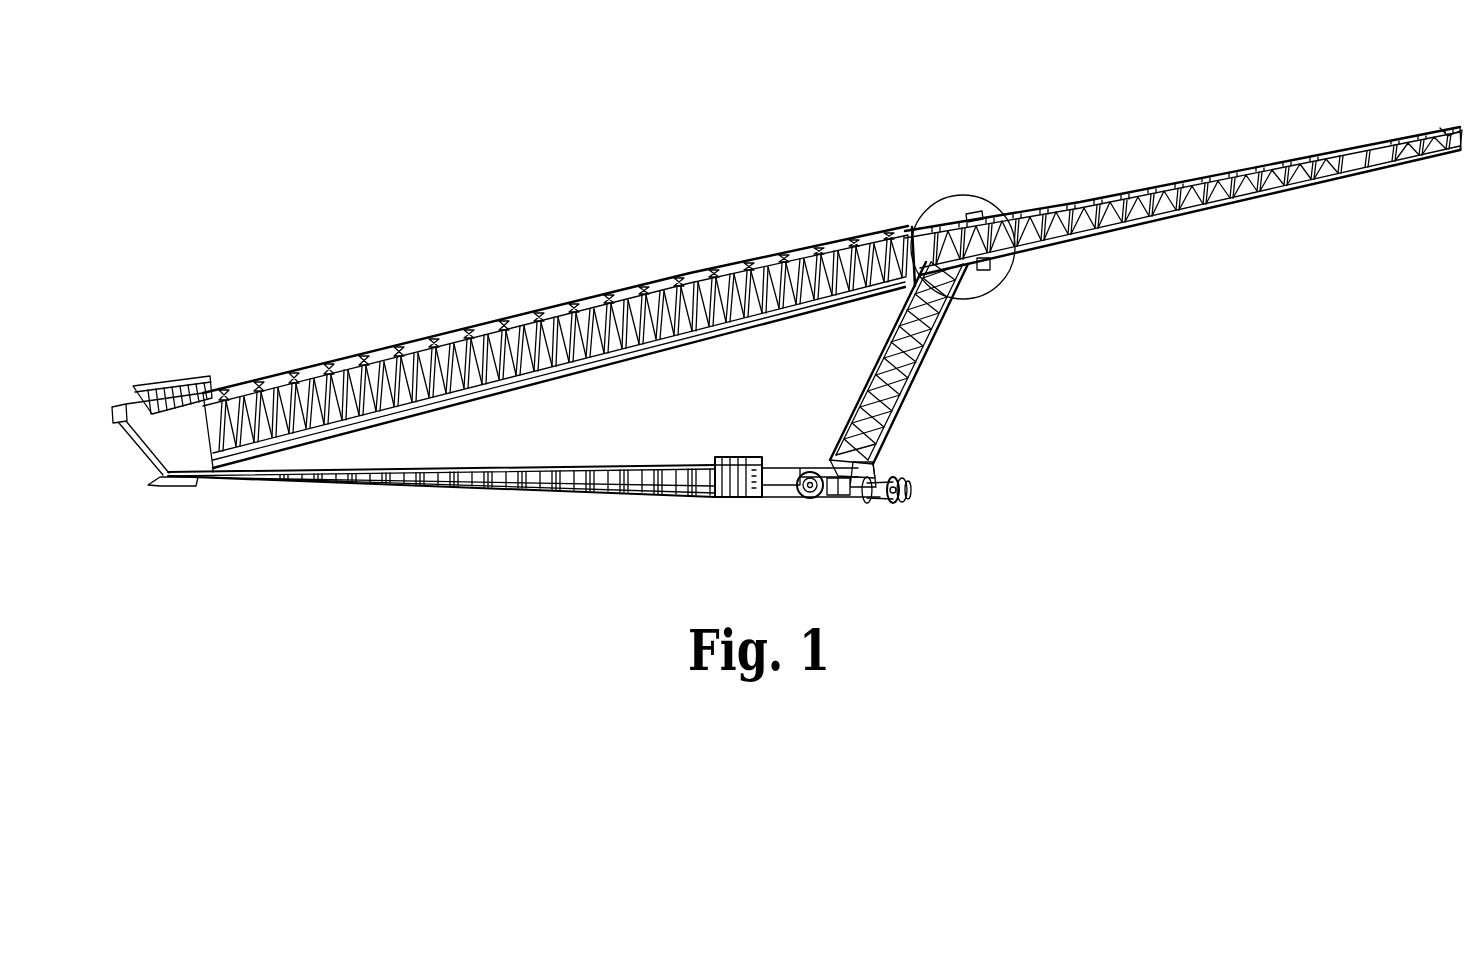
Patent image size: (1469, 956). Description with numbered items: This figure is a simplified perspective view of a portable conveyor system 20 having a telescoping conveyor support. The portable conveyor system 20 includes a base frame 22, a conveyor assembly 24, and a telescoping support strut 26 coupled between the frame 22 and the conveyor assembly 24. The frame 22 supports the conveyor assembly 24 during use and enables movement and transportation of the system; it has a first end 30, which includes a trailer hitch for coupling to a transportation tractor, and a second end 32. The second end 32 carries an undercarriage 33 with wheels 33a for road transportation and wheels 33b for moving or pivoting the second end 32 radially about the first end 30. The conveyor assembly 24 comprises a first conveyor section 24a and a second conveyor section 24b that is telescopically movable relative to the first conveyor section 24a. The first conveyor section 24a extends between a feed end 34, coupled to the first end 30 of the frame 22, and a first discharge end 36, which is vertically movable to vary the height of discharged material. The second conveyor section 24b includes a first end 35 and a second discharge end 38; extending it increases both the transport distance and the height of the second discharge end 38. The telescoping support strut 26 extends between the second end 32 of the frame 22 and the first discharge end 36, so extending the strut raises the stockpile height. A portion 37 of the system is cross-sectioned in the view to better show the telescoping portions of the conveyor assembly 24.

The portable conveyor system 20 is at (520, 183).
The base frame 22 is at (507, 497).
The conveyor assembly 24 is at (761, 245).
The first conveyor section 24a is at (466, 318).
The second conveyor section 24b is at (1158, 183).
The telescoping support strut 26 is at (945, 360).
The first end 30 is at (197, 486).
The second end 32 is at (843, 498).
The undercarriage 33 is at (880, 525).
The wheels 33a is at (808, 498).
The wheels 33b is at (905, 500).
The feed end 34 is at (170, 383).
The first end 35 is at (978, 208).
The first discharge end 36 is at (993, 268).
The portion 37 is at (931, 198).
The second discharge end 38 is at (1449, 128).